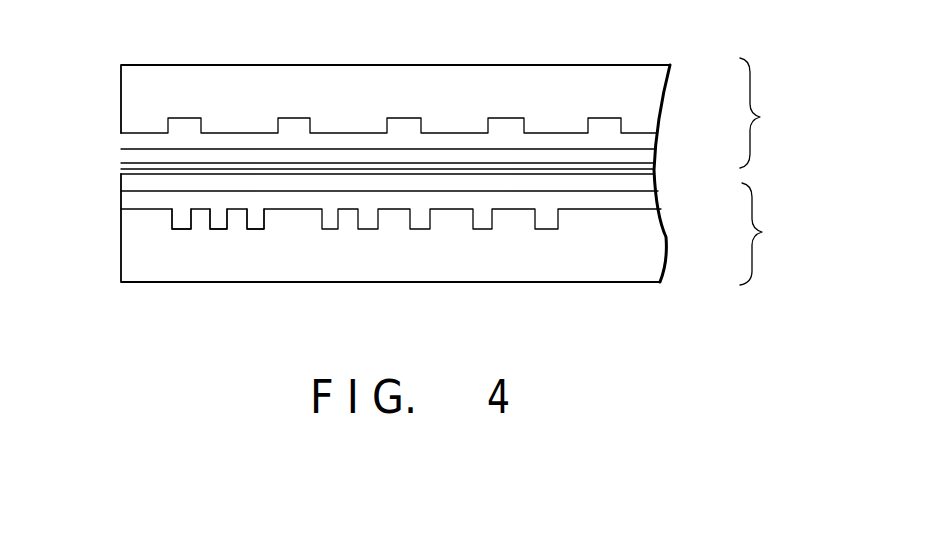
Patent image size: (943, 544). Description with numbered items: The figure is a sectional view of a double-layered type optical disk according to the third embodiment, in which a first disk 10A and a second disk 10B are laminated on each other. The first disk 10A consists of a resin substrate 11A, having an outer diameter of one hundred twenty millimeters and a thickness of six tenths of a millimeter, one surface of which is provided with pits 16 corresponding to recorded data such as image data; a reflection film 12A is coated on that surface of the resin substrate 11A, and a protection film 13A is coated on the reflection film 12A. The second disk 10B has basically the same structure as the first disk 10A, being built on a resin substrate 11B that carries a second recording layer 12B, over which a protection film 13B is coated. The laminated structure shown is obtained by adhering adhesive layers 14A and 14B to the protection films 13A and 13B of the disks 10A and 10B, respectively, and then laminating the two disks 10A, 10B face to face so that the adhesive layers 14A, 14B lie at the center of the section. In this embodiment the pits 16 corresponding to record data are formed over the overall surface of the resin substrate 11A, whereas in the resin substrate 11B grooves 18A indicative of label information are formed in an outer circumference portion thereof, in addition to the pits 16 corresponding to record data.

The first disk 10A is at (775, 234).
The second disk 10B is at (776, 113).
The resin substrate 11A is at (130, 247).
The resin substrate 11B is at (121, 78).
The reflection film 12A is at (655, 202).
The second recording layer 12B is at (645, 138).
The protection film 13A is at (650, 180).
The protection film 13B is at (645, 160).
The adhesive layer 14A is at (121, 170).
The adhesive layer 14B is at (121, 163).
The pits 16 is at (258, 222).
The grooves 18A is at (302, 117).